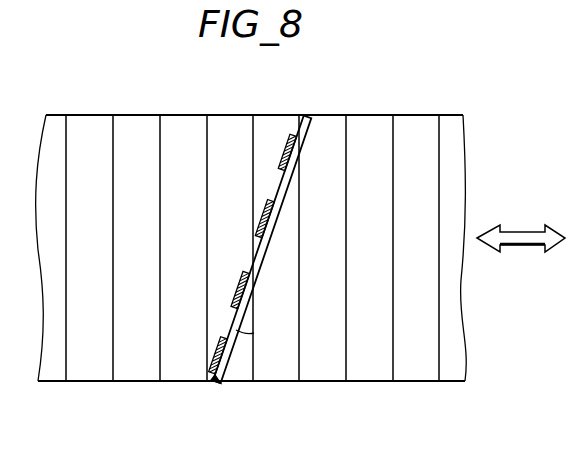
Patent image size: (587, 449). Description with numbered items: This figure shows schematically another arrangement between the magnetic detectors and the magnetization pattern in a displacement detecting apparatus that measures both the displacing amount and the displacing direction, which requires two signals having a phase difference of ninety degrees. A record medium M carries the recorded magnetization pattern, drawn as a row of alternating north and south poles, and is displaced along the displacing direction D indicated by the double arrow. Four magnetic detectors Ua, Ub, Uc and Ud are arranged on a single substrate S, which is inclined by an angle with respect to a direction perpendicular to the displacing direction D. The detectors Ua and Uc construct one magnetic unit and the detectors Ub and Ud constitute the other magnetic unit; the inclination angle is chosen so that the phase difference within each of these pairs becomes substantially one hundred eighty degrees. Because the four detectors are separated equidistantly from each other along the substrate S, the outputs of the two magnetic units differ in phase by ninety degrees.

The record medium M is at (325, 382).
The substrate S is at (308, 133).
The magnetic detector Ua is at (284, 155).
The magnetic detector Ub is at (253, 209).
The magnetic detector Uc is at (234, 295).
The magnetic detector Ud is at (208, 357).
The displacing direction D is at (521, 232).